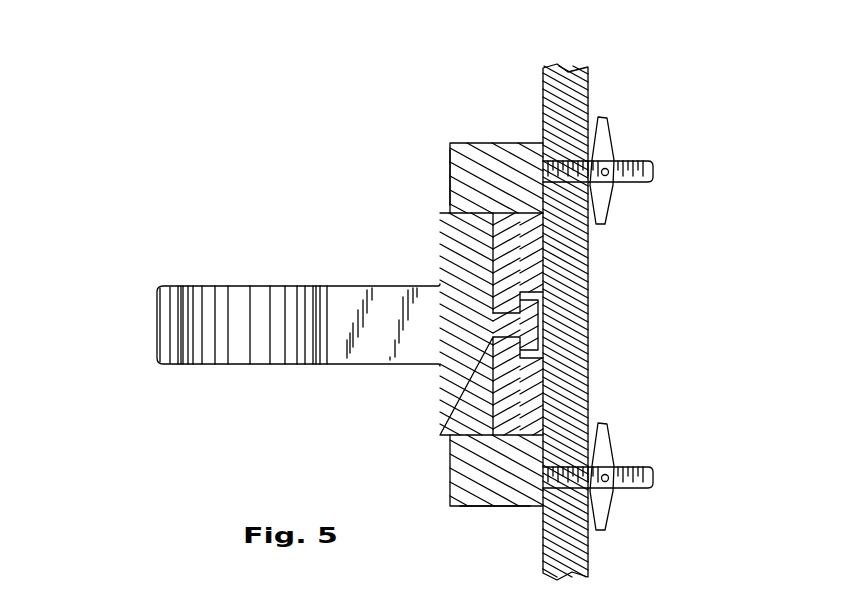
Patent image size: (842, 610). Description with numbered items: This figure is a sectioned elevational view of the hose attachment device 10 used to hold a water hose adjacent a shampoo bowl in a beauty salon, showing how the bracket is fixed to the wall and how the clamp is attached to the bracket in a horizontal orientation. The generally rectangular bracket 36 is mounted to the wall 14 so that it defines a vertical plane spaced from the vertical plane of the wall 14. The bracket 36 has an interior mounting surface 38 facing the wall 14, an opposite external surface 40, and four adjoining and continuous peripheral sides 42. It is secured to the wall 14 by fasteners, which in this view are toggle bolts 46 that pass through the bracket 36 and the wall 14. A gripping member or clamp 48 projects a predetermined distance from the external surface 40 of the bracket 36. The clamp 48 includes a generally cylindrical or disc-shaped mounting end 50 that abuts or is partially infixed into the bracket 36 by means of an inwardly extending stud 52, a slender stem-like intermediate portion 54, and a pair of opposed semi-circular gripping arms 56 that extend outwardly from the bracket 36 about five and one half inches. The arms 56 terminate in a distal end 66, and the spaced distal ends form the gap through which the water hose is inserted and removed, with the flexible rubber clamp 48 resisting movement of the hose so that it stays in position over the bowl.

The hose attachment device 10 is at (358, 398).
The wall 14 is at (571, 67).
The bracket 36 is at (450, 143).
The interior mounting surface 38 is at (515, 200).
The external surface 40 is at (450, 188).
The peripheral sides 42 is at (495, 507).
The toggle bolts 46 is at (640, 160).
The clamp 48 is at (261, 306).
The mounting end 50 is at (440, 388).
The stud 52 is at (535, 305).
The intermediate portion 54 is at (382, 297).
The gripping arms 56 is at (232, 365).
The distal end 66 is at (158, 287).